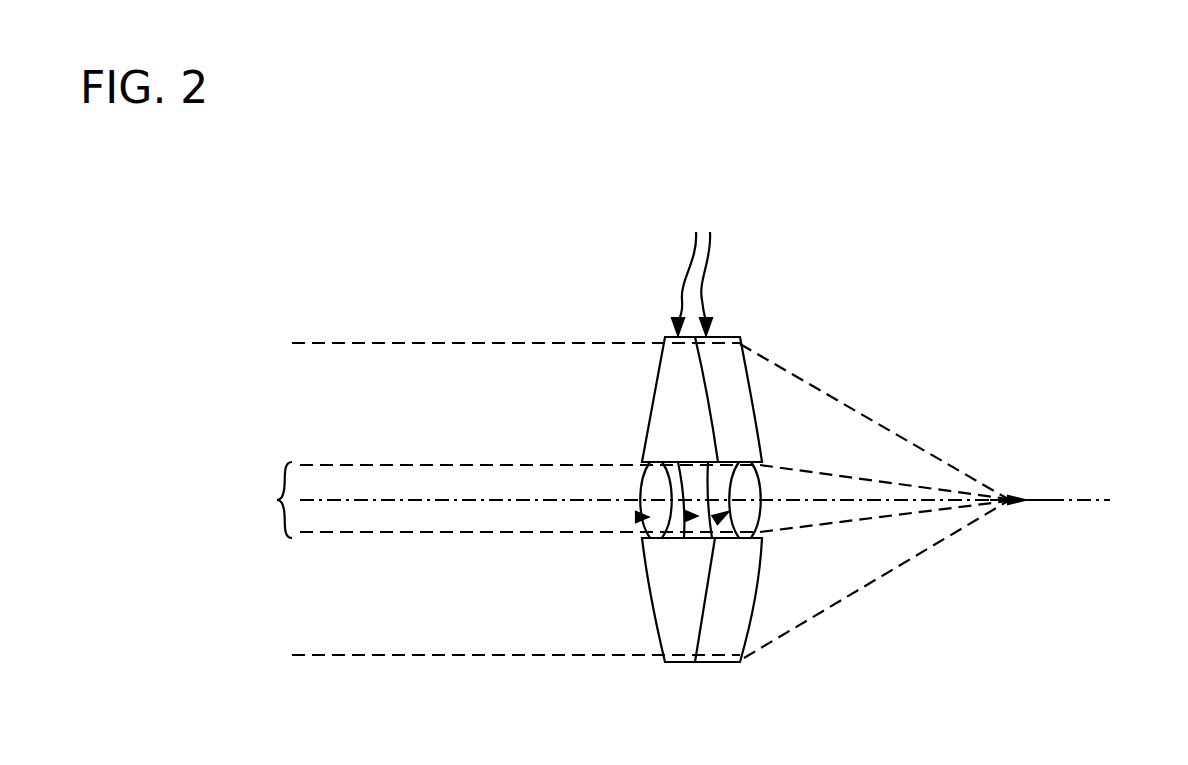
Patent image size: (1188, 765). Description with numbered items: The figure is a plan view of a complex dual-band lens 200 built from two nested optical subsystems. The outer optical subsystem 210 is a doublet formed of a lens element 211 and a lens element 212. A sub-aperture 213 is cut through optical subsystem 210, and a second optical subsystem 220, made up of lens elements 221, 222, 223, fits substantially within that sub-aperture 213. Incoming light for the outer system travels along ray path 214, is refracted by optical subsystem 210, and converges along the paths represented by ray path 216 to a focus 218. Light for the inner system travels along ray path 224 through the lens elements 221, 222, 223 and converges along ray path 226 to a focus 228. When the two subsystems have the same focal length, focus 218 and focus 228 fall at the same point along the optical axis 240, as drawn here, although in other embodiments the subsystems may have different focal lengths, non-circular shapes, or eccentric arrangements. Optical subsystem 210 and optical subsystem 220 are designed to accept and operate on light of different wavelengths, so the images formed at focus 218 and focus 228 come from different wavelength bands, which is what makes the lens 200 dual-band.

The complex dual-band lens 200 is at (1014, 289).
The optical subsystem 210 is at (699, 269).
The lens element 211 is at (665, 385).
The lens element 212 is at (740, 343).
The sub-aperture 213 is at (494, 500).
The ray path 214 is at (398, 343).
The ray path 216 is at (833, 398).
The focus 218 is at (1005, 490).
The optical subsystem 220 is at (715, 520).
The lens element 221 is at (648, 478).
The lens element 222 is at (700, 458).
The lens element 223 is at (758, 492).
The ray path 224 is at (405, 534).
The ray path 226 is at (813, 527).
The focus 228 is at (1005, 512).
The optical axis 240 is at (1090, 500).